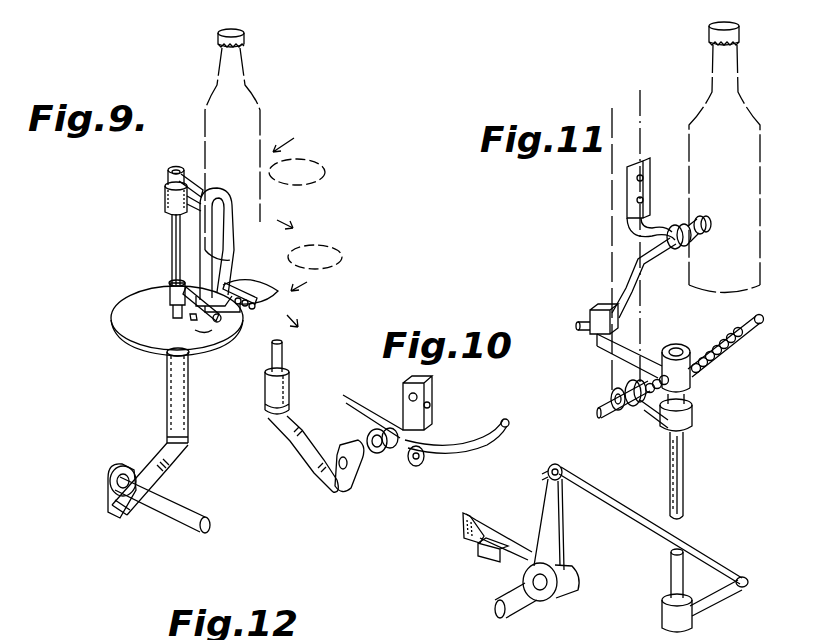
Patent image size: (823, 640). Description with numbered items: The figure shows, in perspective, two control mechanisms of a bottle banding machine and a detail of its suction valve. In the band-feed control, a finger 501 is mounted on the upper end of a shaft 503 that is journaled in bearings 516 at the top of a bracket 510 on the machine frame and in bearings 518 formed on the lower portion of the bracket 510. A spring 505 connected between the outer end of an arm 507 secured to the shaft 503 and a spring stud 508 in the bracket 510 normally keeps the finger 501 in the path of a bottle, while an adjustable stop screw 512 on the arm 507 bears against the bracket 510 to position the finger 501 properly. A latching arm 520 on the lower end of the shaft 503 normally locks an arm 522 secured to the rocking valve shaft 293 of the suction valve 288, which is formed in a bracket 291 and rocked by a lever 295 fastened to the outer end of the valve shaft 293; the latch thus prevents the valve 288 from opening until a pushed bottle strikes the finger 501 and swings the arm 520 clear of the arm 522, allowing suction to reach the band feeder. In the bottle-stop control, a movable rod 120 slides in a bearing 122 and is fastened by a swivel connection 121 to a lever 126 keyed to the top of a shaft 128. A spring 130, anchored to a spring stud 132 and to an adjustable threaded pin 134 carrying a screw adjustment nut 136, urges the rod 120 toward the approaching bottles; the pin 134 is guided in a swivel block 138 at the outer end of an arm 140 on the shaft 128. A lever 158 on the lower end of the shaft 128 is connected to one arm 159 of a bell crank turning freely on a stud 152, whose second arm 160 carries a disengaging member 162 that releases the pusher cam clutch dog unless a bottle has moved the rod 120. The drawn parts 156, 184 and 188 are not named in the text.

In FIG. 9, the finger 501 is at (183, 172).
In FIG. 9, the bearings 516 is at (165, 198).
In FIG. 9, the shaft 503 is at (172, 258).
In FIG. 10, the shaft 503 is at (284, 352).
In FIG. 9, the bracket 510 is at (237, 252).
In FIG. 9, the spring stud 508 is at (243, 270).
In FIG. 9, the spring 505 is at (258, 298).
In FIG. 9, the adjustable stop screw 512 is at (178, 327).
In FIG. 9, the arm 507 is at (203, 335).
In FIG. 9, the bearings 518 is at (167, 396).
In FIG. 9, the latching arm 520 is at (176, 456).
In FIG. 9, the arm 522 is at (108, 497).
In FIG. 10, the arm 522 is at (352, 481).
In FIG. 9, the rocking shaft 293 is at (180, 507).
In FIG. 10, the rocking shaft 293 is at (360, 428).
In FIG. 10, the bracket 291 is at (431, 392).
In FIG. 10, the lever 295 is at (441, 444).
In FIG. 10, the valve 288 is at (413, 466).
In FIG. 11, the bearing 122 is at (627, 200).
In FIG. 11, the rod 120 is at (630, 278).
In FIG. 11, the swivel connection 121 is at (588, 313).
In FIG. 11, the lever 126 is at (650, 348).
In FIG. 11, the shaft 128 is at (686, 440).
In FIG. 11, the arm 140 is at (692, 416).
In FIG. 11, the spring 130 is at (706, 352).
In FIG. 11, the spring stud 132 is at (754, 326).
In FIG. 11, the adjustable threaded pin 134 is at (600, 412).
In FIG. 11, the screw adjustment nut 136 is at (612, 395).
In FIG. 11, the swivel block 138 is at (645, 410).
In FIG. 11, the arm of bell crank 159 is at (557, 522).
In FIG. 11, the link rod 156 is at (650, 522).
In FIG. 11, the stud 152 is at (531, 598).
In FIG. 11, the second arm of bell crank 160 is at (503, 562).
In FIG. 11, the disengaging member 162 is at (463, 532).
In FIG. 11, the lever 158 is at (722, 606).
In FIG. 11, the element 184 is at (600, 628).
In FIG. 11, the element 188 is at (561, 635).